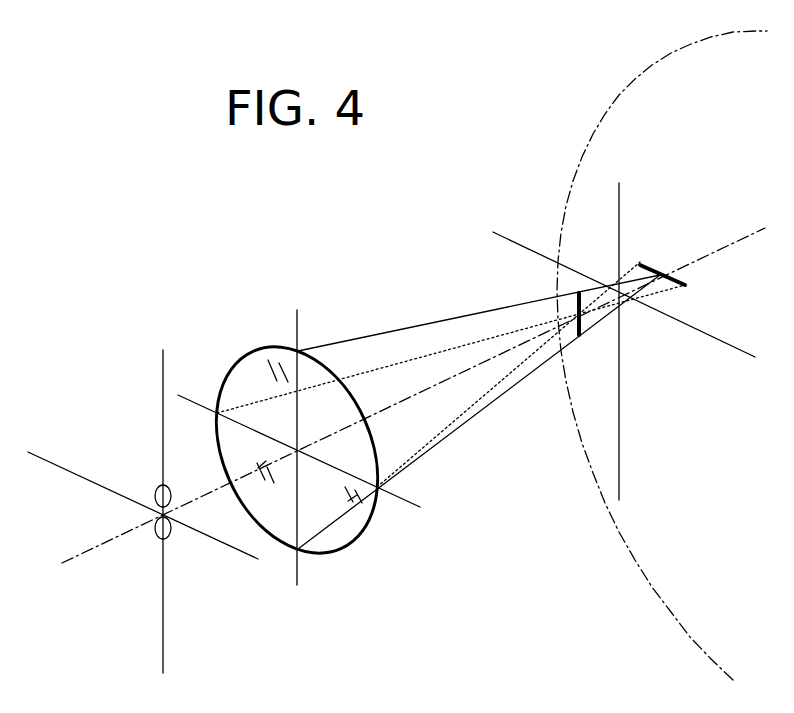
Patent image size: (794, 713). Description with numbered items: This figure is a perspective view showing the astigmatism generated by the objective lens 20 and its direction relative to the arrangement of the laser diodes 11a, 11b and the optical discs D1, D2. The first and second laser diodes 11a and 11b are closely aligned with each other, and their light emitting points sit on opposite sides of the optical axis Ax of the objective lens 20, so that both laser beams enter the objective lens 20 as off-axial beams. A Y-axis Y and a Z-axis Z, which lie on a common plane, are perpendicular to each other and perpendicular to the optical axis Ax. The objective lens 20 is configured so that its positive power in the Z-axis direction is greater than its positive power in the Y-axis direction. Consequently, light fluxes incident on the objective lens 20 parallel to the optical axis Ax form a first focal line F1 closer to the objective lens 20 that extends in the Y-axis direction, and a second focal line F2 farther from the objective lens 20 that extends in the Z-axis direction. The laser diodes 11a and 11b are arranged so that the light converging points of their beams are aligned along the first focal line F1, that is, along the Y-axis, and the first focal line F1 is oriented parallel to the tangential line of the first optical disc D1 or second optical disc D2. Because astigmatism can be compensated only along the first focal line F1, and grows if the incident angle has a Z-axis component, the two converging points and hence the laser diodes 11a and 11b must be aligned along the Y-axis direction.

The objective lens 20 is at (259, 365).
The first laser diode 11a is at (157, 488).
The second laser diode 11b is at (168, 537).
The first focal line F1 is at (580, 323).
The second focal line F2 is at (641, 265).
The optical axis Ax is at (430, 388).
The first optical disc D1 is at (642, 355).
The second optical disc D2 is at (663, 562).
The Y-axis Y is at (295, 434).
The Z-axis Z is at (309, 458).